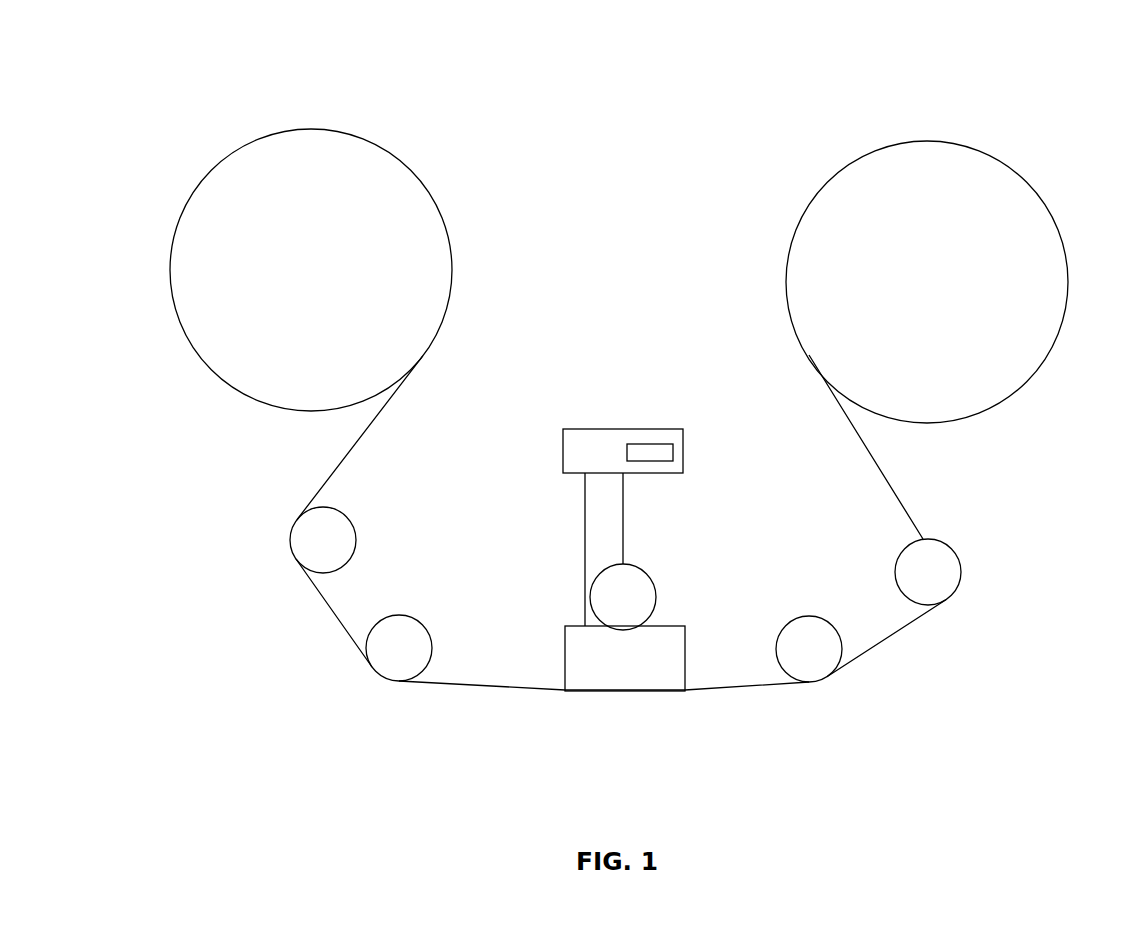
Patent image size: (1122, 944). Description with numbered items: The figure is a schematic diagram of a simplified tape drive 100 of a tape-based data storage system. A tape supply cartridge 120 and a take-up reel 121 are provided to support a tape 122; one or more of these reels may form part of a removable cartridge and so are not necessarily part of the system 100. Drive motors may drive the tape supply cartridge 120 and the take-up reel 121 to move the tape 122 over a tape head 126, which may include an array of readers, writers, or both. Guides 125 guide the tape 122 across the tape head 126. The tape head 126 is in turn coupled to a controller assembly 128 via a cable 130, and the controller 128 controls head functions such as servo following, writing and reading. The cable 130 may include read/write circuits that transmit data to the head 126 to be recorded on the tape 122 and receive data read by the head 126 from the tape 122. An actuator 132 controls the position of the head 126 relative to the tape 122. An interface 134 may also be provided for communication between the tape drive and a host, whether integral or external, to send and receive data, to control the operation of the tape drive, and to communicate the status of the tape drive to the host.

The tape drive 100 is at (266, 461).
The tape supply cartridge 120 is at (451, 240).
The take-up reel 121 is at (1016, 392).
The tape 122 is at (484, 687).
The guides 125 is at (399, 614).
The tape head 126 is at (687, 657).
The controller assembly 128 is at (623, 428).
The cable 130 is at (585, 592).
The actuator 132 is at (648, 572).
The interface 134 is at (662, 444).